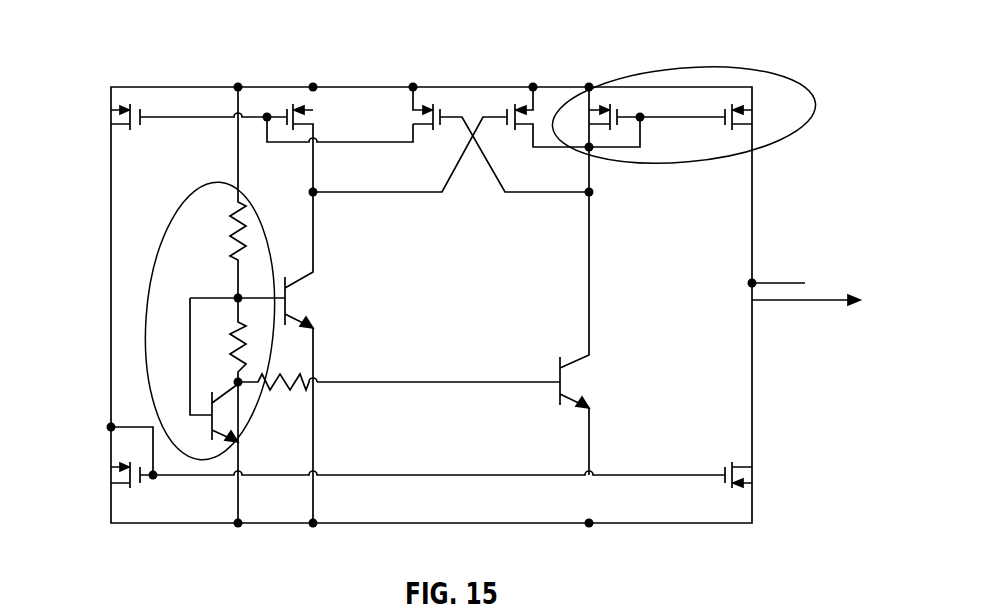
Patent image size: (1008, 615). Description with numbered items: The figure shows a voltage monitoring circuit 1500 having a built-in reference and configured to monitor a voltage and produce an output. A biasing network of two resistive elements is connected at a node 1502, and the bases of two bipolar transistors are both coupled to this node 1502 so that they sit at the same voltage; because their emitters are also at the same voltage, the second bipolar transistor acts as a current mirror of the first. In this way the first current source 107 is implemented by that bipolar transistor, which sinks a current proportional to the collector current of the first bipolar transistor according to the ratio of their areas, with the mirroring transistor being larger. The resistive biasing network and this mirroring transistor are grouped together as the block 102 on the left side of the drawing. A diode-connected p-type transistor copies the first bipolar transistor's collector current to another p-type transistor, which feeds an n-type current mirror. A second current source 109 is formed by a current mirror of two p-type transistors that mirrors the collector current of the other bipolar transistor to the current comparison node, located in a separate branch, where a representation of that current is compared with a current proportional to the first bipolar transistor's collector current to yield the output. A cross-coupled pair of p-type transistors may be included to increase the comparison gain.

The voltage monitoring circuit 1500 is at (185, 39).
The second current source 109 is at (742, 63).
The resistor divider network 102 is at (184, 197).
The node 1502 is at (236, 297).
The first current source 107 is at (230, 394).